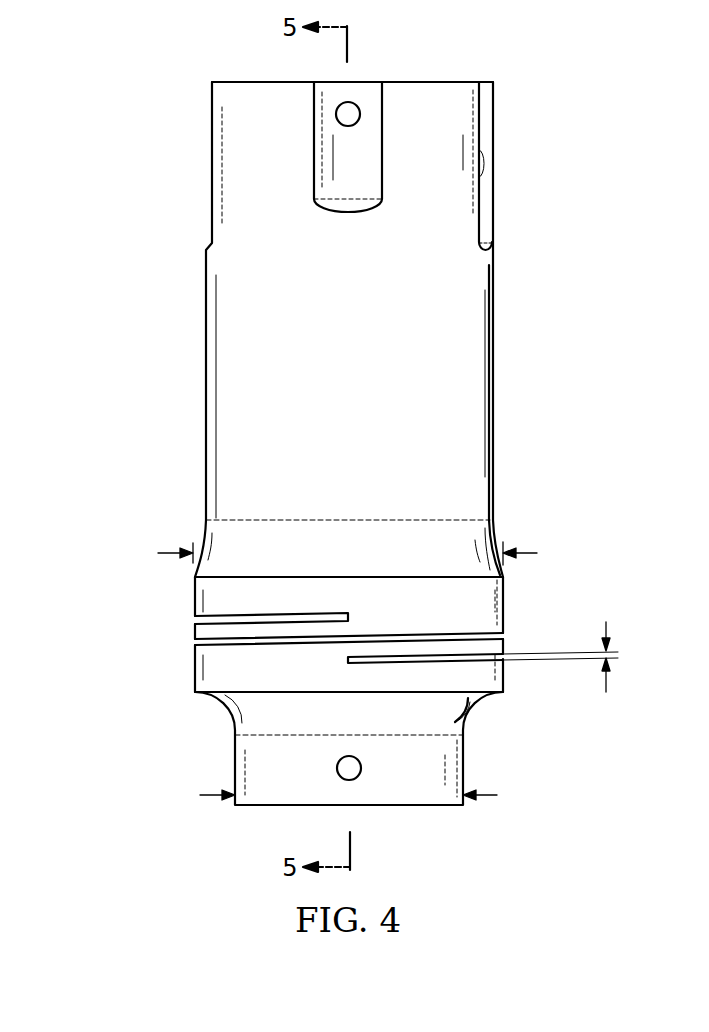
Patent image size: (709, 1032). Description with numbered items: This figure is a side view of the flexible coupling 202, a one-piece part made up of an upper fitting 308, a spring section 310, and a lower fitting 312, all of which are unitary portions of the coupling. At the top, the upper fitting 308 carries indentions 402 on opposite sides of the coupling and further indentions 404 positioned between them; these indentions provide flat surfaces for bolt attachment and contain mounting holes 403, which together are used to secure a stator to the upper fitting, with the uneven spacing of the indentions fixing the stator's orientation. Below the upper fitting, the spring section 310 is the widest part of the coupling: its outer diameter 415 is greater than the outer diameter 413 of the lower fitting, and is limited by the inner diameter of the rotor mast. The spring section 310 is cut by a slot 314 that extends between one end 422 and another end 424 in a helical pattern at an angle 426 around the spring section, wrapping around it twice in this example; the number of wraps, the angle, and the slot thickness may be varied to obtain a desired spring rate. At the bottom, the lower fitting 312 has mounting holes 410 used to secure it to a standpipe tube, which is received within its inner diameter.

The flexible coupling 202 is at (164, 342).
The indentions 402 is at (212, 165).
The mounting holes 403 is at (348, 118).
The indentions 404 is at (373, 168).
The upper fitting 308 is at (462, 225).
The outer diameter 415 is at (167, 553).
The spring section 310 is at (498, 605).
The end 422 is at (348, 617).
The slot 314 is at (195, 642).
The end 424 is at (348, 659).
The angle 426 is at (605, 684).
The lower fitting 312 is at (453, 760).
The mounting holes 410 is at (340, 769).
The outer diameter 413 is at (213, 795).